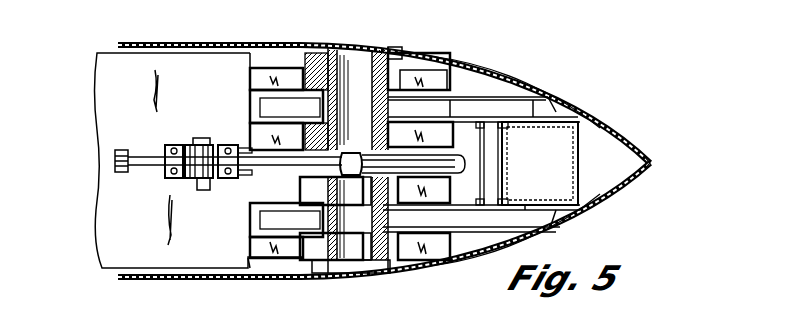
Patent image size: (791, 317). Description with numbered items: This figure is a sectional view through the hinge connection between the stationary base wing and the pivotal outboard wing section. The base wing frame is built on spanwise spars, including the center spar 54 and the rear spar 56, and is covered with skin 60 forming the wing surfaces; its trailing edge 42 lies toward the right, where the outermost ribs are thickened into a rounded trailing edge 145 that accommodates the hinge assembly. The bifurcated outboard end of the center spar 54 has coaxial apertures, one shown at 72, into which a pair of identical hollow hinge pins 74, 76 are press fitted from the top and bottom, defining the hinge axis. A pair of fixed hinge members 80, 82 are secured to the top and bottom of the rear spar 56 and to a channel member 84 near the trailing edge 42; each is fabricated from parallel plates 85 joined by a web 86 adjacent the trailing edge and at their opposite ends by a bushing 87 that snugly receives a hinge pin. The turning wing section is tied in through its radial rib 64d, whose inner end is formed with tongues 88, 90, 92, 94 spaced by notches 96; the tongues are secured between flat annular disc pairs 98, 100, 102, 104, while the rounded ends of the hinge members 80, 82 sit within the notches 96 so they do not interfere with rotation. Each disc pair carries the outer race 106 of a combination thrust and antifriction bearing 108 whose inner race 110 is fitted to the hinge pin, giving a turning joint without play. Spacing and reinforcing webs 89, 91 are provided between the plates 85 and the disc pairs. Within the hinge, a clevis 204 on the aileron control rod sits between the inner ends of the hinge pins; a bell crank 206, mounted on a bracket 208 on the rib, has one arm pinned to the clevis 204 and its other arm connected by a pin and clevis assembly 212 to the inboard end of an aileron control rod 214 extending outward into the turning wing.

The trailing edge 42 is at (652, 163).
The center spar 54 is at (394, 58).
The rear spar 56 is at (502, 152).
The skin 60 is at (224, 45).
The radial rib 64d is at (100, 92).
The aperture 72 is at (340, 50).
The hinge pin 74 is at (325, 52).
The hinge pin 76 is at (381, 50).
The fixed hinge member 80 is at (503, 94).
The fixed hinge member 82 is at (507, 236).
The channel member 84 is at (578, 158).
The parallel plates 85 is at (458, 116).
The web 86 is at (572, 112).
The bushing 87 is at (276, 247).
The tongue 88 is at (263, 75).
The spacing and reinforcing web 89 is at (534, 108).
The tongue 90 is at (258, 178).
The spacing and reinforcing web 91 is at (440, 65).
The tongue 92 is at (260, 199).
The tongue 94 is at (262, 245).
The notch 96 is at (252, 105).
The annular disc 98 is at (453, 97).
The annular disc 100 is at (447, 141).
The annular disc 102 is at (446, 180).
The annular disc 104 is at (430, 265).
The outer race 106 is at (416, 70).
The combination thrust and antifriction bearing 108 is at (310, 65).
The inner race 110 is at (355, 156).
The thickened trailing edge 145 is at (483, 63).
The clevis 204 is at (331, 218).
The bell crank 206 is at (203, 138).
The bracket 208 is at (176, 145).
The pin and clevis assembly 212 is at (127, 150).
The aileron control rod 214 is at (128, 170).